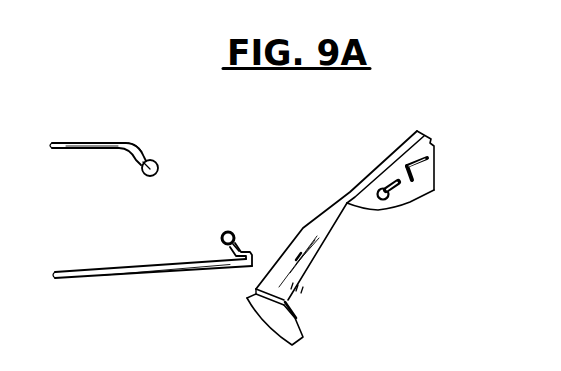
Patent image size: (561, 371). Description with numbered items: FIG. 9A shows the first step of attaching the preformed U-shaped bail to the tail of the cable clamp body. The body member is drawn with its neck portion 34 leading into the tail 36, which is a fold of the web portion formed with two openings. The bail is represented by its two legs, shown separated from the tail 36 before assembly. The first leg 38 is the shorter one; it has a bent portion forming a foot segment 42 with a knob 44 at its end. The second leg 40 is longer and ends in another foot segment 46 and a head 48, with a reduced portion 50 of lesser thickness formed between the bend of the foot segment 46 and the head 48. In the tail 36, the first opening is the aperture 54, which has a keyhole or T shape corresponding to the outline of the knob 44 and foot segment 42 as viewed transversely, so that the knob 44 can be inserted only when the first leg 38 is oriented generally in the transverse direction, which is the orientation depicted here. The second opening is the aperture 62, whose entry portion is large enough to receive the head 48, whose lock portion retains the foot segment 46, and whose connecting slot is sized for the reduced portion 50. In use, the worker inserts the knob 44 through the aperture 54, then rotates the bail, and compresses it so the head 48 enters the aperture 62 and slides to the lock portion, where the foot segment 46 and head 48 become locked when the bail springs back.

The neck portion 34 is at (345, 232).
The tail 36 is at (428, 137).
The first leg 38 is at (92, 143).
The second leg 40 is at (130, 273).
The foot segment 42 is at (141, 150).
The knob 44 is at (147, 176).
The foot segment 46 is at (272, 258).
The head 48 is at (222, 234).
The reduced portion 50 is at (243, 250).
The aperture 54 is at (415, 169).
The aperture 62 is at (395, 198).